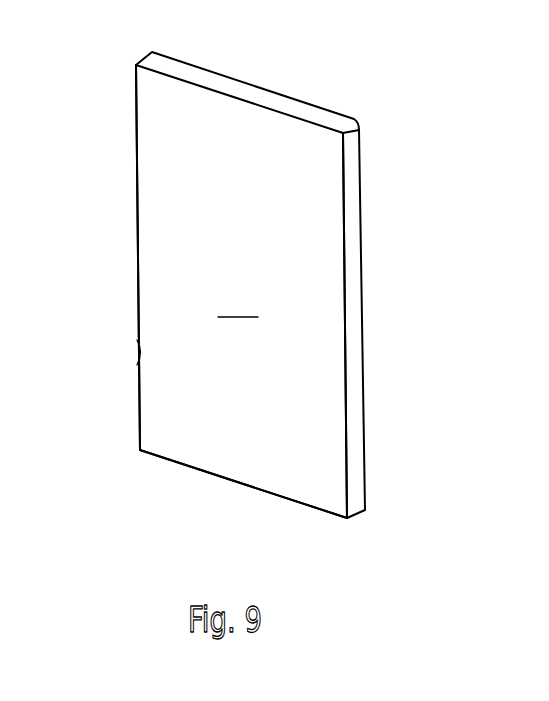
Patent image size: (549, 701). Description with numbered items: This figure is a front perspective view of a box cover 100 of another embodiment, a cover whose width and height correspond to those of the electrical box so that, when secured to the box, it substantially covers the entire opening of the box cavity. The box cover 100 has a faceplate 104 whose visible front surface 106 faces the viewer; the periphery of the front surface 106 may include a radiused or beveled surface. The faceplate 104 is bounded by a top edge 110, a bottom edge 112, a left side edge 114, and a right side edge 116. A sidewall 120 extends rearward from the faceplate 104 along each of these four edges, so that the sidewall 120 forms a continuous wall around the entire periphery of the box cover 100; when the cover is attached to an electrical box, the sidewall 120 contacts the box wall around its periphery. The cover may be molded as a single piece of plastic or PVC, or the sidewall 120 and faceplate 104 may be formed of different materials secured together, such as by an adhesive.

The box cover 100 is at (276, 290).
The faceplate 104 is at (330, 362).
The front surface 106 is at (238, 301).
The top edge 110 is at (233, 102).
The bottom edge 112 is at (253, 488).
The left side edge 114 is at (137, 370).
The right side edge 116 is at (340, 440).
The sidewall 120 is at (280, 90).